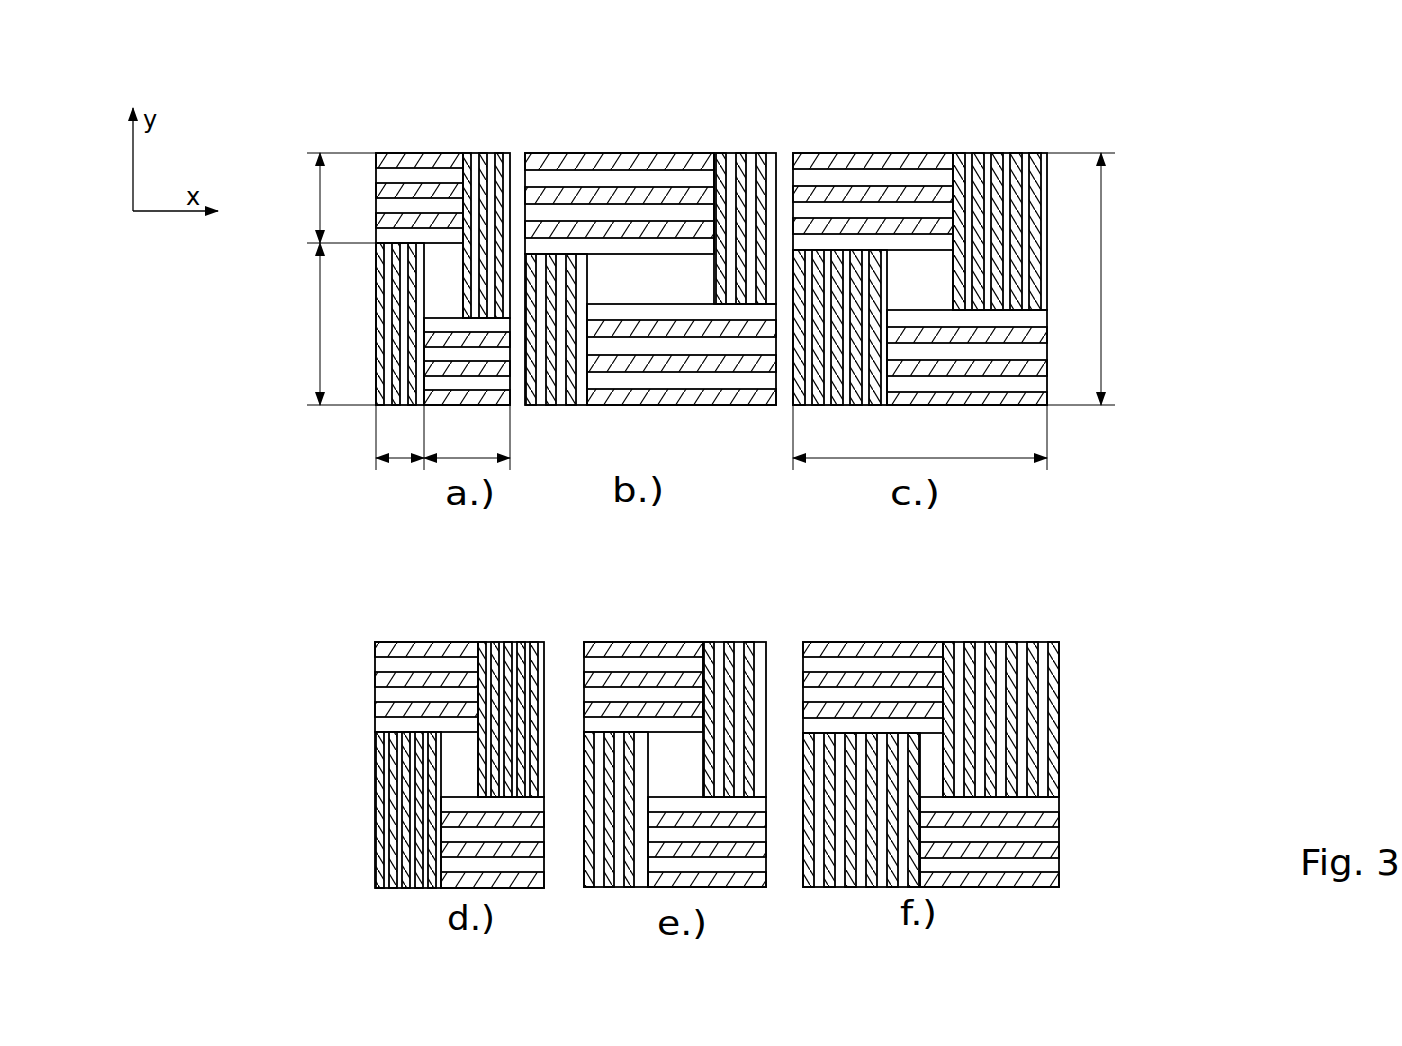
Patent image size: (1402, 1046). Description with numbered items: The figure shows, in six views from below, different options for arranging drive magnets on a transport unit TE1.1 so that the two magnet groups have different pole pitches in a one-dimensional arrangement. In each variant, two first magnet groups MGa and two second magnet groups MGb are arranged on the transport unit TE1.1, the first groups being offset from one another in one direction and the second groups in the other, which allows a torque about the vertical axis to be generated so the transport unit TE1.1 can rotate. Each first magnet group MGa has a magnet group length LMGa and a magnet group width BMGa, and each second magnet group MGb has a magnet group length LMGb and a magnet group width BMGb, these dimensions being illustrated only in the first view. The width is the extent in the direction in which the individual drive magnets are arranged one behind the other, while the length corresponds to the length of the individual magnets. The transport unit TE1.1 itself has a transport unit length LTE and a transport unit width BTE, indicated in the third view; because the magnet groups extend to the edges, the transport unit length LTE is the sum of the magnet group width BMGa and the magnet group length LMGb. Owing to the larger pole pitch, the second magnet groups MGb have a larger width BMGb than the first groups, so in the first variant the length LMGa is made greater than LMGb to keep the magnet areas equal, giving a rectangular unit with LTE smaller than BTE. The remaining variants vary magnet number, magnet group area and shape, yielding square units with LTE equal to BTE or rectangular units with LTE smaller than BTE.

In FIG. 3a, the transport unit TE1.1 is at (357, 135).
In FIG. 3b, the transport unit TE1.1 is at (668, 423).
In FIG. 3c, the transport unit TE1.1 is at (1078, 130).
In FIG. 3d, the transport unit TE1.1 is at (352, 640).
In FIG. 3e, the transport unit TE1.1 is at (570, 632).
In FIG. 3f, the transport unit TE1.1 is at (1078, 628).
In FIG. 3a, the first magnet group MGa is at (510, 141).
In FIG. 3b, the first magnet group MGa is at (776, 141).
In FIG. 3c, the first magnet group MGa is at (1047, 141).
In FIG. 3d, the first magnet group MGa is at (360, 732).
In FIG. 3e, the first magnet group MGa is at (766, 636).
In FIG. 3f, the first magnet group MGa is at (1059, 636).
In FIG. 3a, the second magnet group MGb is at (461, 141).
In FIG. 3b, the second magnet group MGb is at (712, 141).
In FIG. 3c, the second magnet group MGb is at (951, 141).
In FIG. 3d, the second magnet group MGb is at (477, 634).
In FIG. 3e, the second magnet group MGb is at (701, 636).
In FIG. 3f, the second magnet group MGb is at (941, 636).
In FIG. 3a, the magnet group width of the second magnet group BMGb is at (313, 198).
In FIG. 3a, the magnet group length of the first magnet group LMGa is at (312, 324).
In FIG. 3a, the magnet group width of the first magnet group BMGa is at (356, 437).
In FIG. 3a, the magnet group length of the second magnet group LMGb is at (467, 437).
In FIG. 3c, the transport unit width BTE is at (1101, 279).
In FIG. 3c, the transport unit length LTE is at (920, 437).